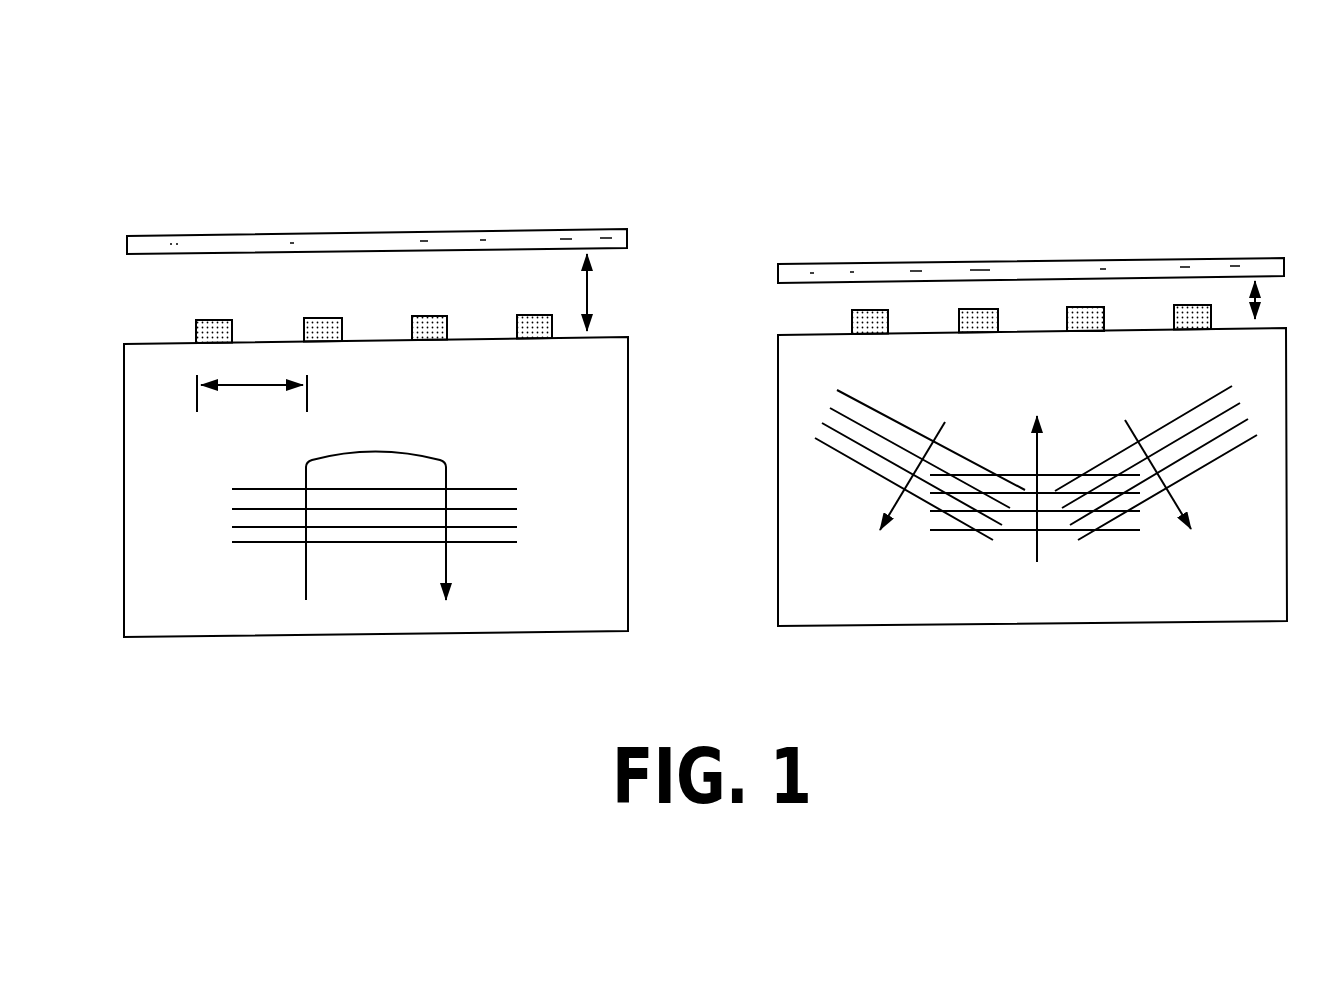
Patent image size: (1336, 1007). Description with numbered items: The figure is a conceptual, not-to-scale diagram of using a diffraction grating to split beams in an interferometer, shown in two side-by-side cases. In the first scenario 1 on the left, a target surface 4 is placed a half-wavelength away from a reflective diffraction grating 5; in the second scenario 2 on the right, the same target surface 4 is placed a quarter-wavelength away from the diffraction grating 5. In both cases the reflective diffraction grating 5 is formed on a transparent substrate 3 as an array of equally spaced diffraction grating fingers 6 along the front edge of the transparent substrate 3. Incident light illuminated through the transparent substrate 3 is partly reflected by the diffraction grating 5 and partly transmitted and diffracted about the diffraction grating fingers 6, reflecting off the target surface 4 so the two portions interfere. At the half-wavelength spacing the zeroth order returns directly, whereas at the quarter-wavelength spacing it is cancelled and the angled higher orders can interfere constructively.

The first scenario 1 is at (308, 132).
The second scenario 2 is at (1056, 203).
The transparent substrate 3 is at (125, 562).
The target surface 4 is at (173, 233).
The reflective diffraction grating 5 is at (142, 311).
The diffraction grating fingers 6 is at (217, 318).